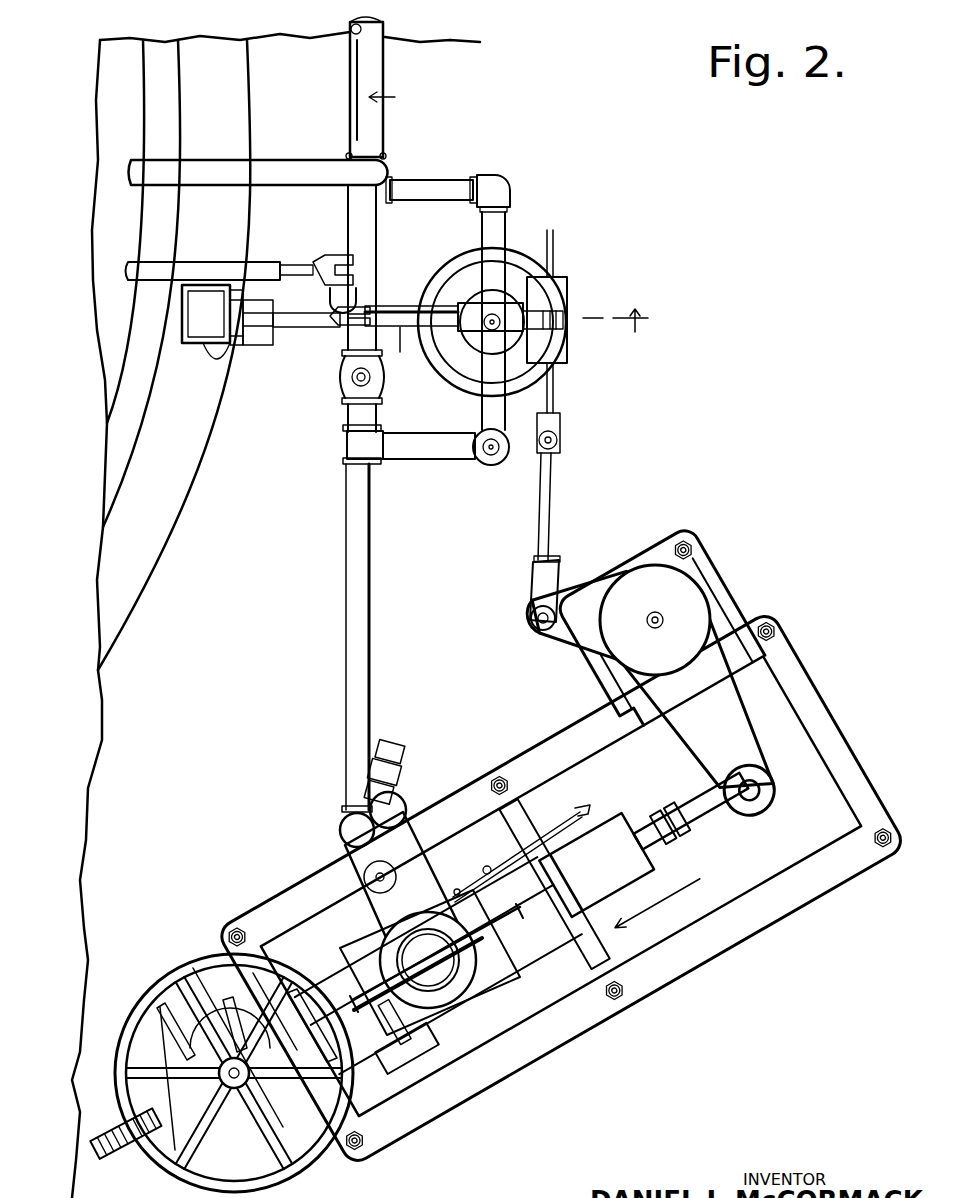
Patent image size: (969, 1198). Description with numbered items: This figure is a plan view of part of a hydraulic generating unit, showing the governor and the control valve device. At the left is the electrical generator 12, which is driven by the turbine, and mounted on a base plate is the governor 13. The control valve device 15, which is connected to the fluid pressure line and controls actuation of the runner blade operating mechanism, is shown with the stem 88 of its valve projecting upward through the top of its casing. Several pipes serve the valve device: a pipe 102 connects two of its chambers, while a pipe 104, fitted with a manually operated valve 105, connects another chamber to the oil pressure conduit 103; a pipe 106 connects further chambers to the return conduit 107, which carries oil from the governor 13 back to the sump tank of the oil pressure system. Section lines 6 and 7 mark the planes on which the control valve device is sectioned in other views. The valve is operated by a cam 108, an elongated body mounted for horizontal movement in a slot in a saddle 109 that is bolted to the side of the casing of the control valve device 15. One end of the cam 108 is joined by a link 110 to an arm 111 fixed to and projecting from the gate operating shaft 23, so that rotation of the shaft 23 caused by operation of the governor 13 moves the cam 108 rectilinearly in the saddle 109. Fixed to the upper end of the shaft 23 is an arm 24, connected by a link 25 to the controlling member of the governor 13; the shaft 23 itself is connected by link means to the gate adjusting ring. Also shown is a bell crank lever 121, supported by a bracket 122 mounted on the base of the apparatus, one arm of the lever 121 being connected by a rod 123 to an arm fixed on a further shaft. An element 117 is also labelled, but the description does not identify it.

The section line 6- 6 is at (550, 214).
The section line 7- 7 is at (529, 343).
The electrical generator 12 is at (276, 615).
The governor 13 is at (292, 897).
The control valve device 15 is at (463, 272).
The shaft 23 is at (657, 616).
The arm 24 is at (658, 688).
The link 25 is at (658, 835).
The valve stem 88 is at (489, 327).
The pipe 102 is at (224, 170).
The oil pressure conduit 103 is at (357, 533).
The pipe 104 is at (420, 450).
The manually operated valve 105 is at (490, 454).
The pipe 106 is at (437, 192).
The return conduit 107 is at (352, 98).
The cam 108 is at (556, 388).
The saddle 109 is at (558, 301).
The link 110 is at (546, 505).
The arm 111 is at (569, 620).
The operating rod 117 is at (406, 310).
The bell crank lever 121 is at (303, 315).
The bracket 122 is at (240, 318).
The rod 123 is at (213, 270).